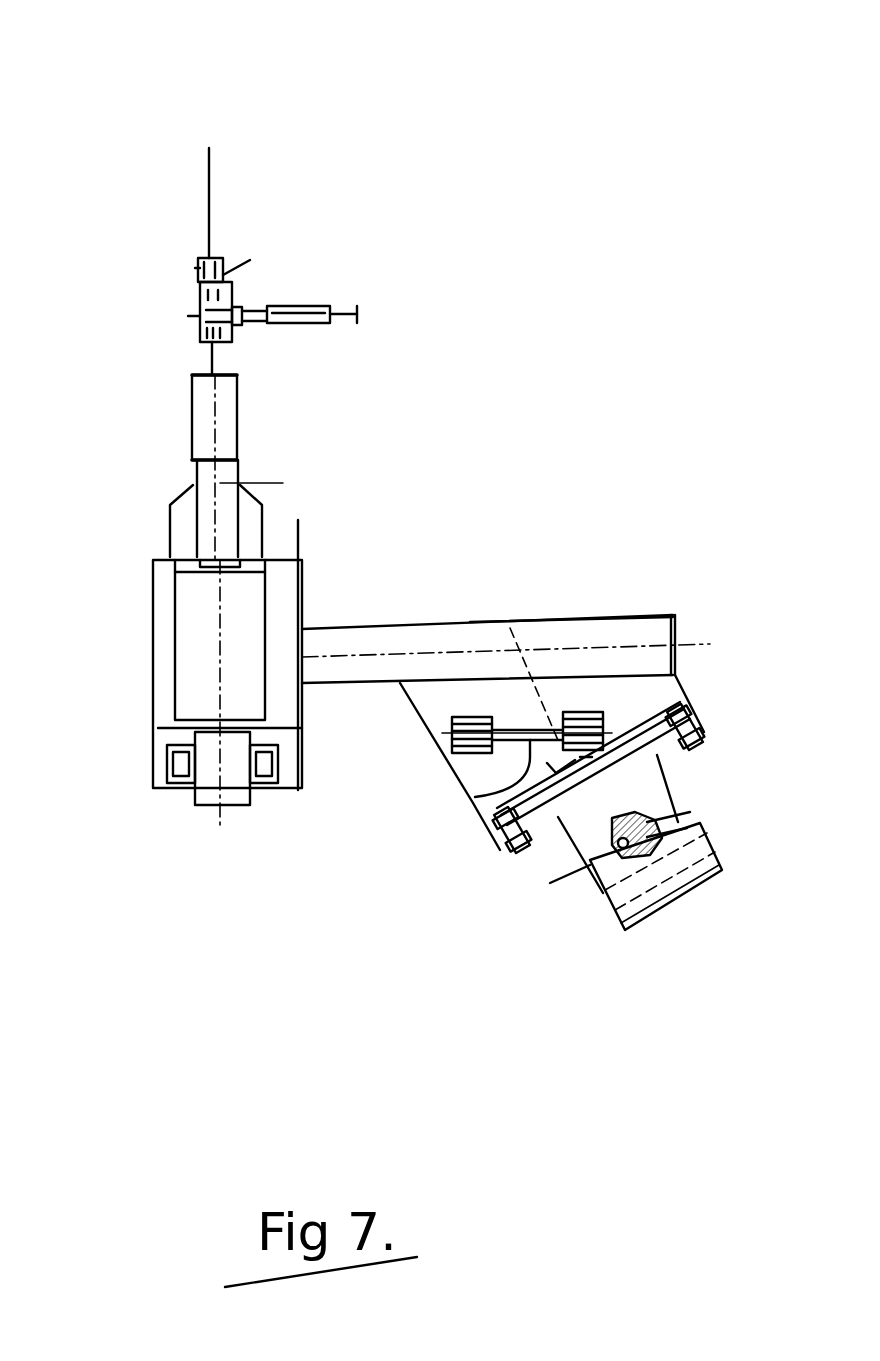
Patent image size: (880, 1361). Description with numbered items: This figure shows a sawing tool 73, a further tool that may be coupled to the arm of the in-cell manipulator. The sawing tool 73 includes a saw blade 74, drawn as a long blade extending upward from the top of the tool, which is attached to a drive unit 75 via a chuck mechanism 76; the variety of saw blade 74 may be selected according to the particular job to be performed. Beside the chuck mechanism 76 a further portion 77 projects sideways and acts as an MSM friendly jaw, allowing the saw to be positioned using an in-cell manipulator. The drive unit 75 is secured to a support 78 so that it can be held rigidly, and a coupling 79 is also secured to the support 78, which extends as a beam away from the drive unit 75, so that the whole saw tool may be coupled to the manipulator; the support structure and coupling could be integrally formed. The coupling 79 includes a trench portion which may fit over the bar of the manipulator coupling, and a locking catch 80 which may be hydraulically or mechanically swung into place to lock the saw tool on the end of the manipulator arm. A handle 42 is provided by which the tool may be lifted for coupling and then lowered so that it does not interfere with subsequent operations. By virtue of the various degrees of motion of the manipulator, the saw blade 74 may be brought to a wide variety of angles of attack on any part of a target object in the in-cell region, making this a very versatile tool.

The sawing tool 73 is at (615, 360).
The saw blade 74 is at (215, 178).
The drive unit 75 is at (187, 527).
The chuck mechanism 76 is at (182, 303).
The further portion 77 is at (280, 324).
The support 78 is at (302, 583).
The handle 42 is at (390, 847).
The coupling 79 is at (710, 857).
The locking catch 80 is at (690, 775).